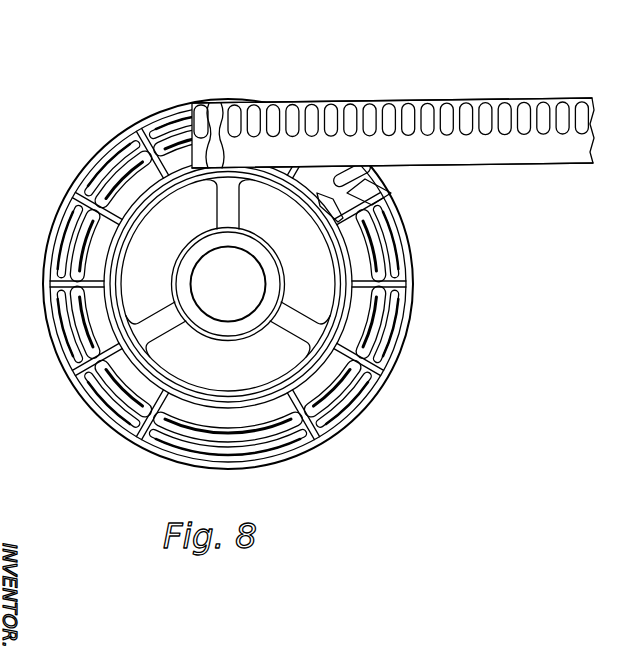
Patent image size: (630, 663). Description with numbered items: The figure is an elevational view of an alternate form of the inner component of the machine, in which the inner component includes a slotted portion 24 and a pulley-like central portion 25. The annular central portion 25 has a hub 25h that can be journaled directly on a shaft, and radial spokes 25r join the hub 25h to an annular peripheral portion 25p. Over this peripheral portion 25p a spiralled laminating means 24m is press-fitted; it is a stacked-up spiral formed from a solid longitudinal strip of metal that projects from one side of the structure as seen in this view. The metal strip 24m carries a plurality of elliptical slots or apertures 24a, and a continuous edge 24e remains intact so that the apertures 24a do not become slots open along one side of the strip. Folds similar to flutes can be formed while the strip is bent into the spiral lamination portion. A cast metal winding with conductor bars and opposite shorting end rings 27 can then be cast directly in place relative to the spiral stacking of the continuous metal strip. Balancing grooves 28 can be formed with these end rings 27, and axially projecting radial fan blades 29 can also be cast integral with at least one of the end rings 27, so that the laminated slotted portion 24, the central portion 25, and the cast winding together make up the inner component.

The slotted portion 24 is at (393, 124).
The apertures 24a is at (505, 108).
The continuous edge 24e is at (381, 99).
The spiralled laminating means 24m is at (543, 155).
The pulley-like central portion 25 is at (227, 284).
The radial spokes 25r is at (231, 207).
The hub 25h is at (274, 281).
The annular peripheral portion 25p is at (240, 394).
The shorting end rings 27 is at (123, 427).
The balancing grooves 28 is at (348, 402).
The radial fan blades 29 is at (405, 338).